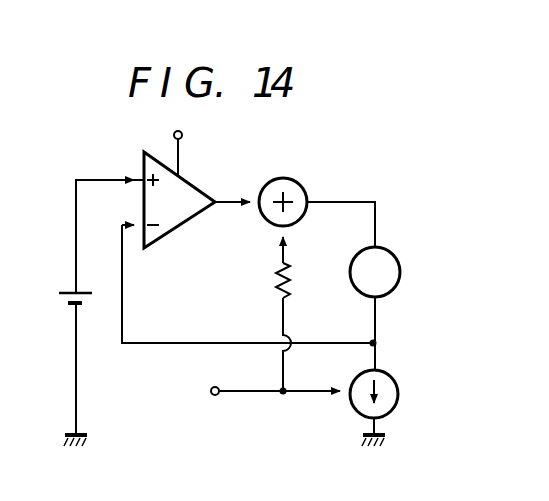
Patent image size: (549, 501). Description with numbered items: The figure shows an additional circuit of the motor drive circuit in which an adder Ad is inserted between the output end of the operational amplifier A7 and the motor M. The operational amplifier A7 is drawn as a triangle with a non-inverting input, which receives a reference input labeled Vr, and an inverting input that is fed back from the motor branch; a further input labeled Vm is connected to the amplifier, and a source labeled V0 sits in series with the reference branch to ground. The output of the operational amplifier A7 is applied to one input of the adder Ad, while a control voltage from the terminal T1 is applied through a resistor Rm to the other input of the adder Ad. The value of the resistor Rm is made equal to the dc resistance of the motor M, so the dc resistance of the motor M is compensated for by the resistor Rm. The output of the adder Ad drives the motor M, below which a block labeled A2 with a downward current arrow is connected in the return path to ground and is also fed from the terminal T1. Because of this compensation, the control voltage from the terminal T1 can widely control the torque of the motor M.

The operational amplifier A7 is at (190, 180).
The measured voltage input Vm is at (201, 145).
The reference voltage Vr is at (76, 196).
The offset voltage source V0 is at (73, 300).
The adder Ad is at (303, 195).
The motor M is at (392, 288).
The resistor Rm is at (276, 279).
The terminal T1 is at (218, 396).
The current source amplifier A2 is at (351, 400).